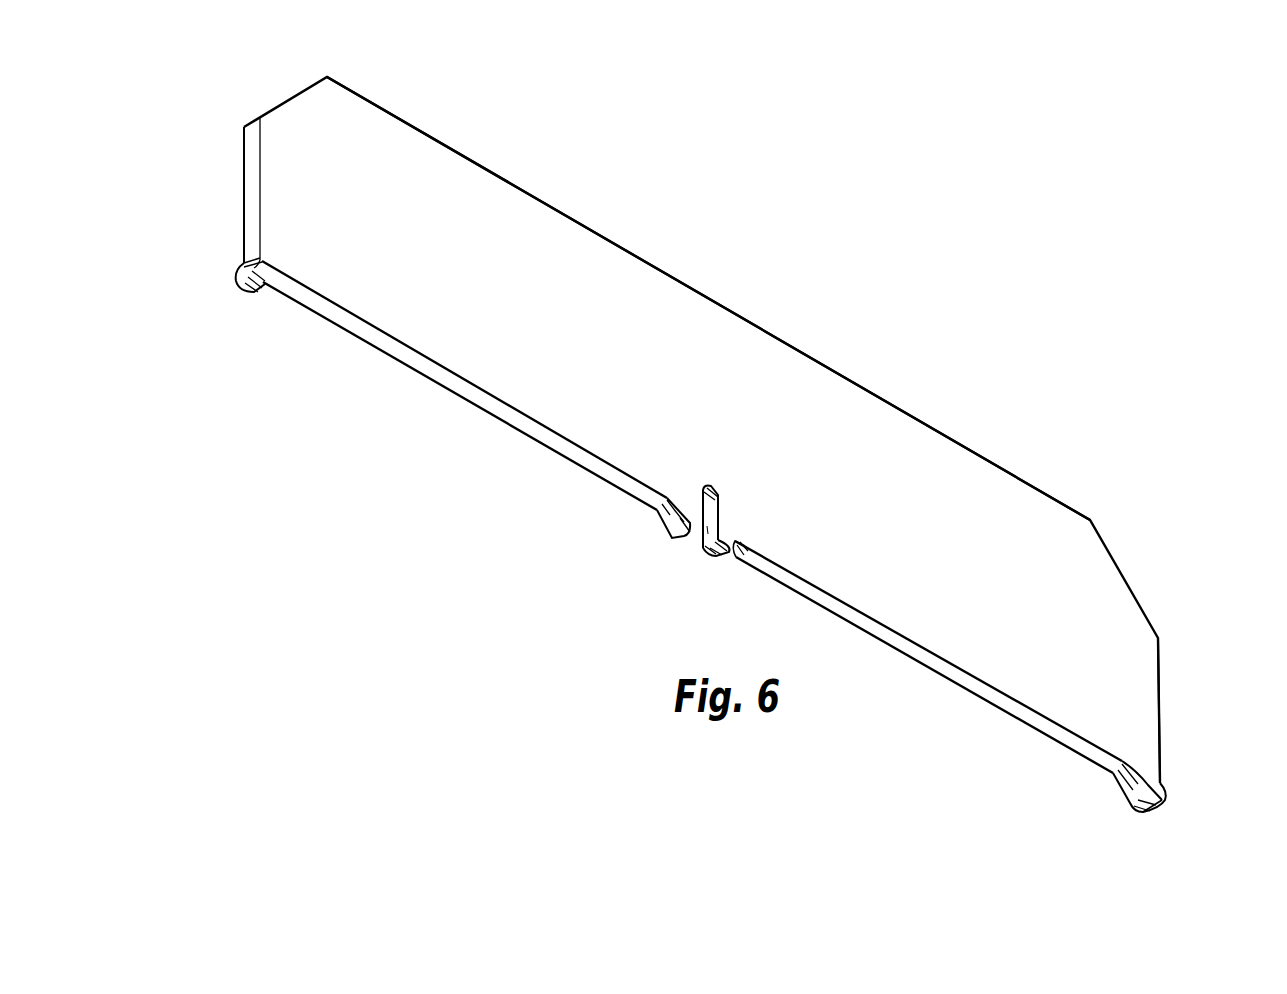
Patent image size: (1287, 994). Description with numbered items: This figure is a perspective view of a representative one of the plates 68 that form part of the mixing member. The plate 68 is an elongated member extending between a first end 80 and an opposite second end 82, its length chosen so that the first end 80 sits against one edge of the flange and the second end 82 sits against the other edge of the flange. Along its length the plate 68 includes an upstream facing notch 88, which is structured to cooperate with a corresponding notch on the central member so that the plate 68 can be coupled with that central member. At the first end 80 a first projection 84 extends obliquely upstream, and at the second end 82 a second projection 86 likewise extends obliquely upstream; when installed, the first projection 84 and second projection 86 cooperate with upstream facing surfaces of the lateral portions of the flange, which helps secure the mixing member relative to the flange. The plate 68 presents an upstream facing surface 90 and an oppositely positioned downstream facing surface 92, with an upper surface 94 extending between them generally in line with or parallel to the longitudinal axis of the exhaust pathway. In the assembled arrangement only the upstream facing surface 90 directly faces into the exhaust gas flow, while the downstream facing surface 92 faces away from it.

The plate 68 is at (262, 80).
The first end 80 is at (243, 183).
The second end 82 is at (1160, 700).
The first projection 84 is at (237, 290).
The second projection 86 is at (1160, 808).
The upstream facing notch 88 is at (703, 558).
The upstream facing surface 90 is at (868, 625).
The downstream facing surface 92 is at (738, 313).
The upper surface 94 is at (498, 238).